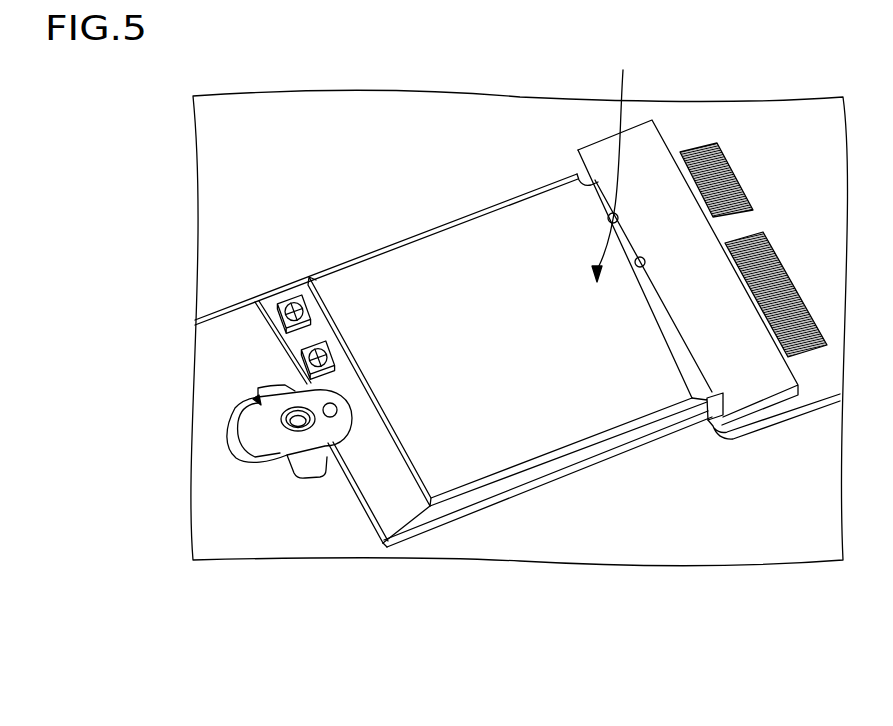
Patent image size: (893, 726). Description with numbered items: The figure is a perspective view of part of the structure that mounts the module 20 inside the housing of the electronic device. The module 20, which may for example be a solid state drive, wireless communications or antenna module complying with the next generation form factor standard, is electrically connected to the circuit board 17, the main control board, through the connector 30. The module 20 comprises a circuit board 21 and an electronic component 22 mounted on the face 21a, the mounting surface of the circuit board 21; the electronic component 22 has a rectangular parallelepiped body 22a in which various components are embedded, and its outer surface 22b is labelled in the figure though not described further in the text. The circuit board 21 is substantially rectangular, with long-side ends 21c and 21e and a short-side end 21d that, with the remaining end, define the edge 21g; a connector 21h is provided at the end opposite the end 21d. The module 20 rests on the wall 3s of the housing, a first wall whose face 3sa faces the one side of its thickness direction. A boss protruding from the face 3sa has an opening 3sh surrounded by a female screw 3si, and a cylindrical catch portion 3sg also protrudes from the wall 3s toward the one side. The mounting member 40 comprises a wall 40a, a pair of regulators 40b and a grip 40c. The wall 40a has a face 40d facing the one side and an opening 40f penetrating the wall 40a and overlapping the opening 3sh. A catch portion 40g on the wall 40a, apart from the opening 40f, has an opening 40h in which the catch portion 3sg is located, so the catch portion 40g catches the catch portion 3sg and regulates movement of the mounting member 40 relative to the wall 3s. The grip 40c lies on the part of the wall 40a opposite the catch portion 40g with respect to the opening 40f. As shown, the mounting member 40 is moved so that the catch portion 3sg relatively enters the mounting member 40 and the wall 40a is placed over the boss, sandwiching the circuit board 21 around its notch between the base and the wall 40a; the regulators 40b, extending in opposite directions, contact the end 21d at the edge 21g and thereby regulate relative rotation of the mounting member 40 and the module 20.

The circuit board 17 is at (519, 343).
The wall 3s is at (519, 365).
The face 3sa is at (716, 589).
The catch portion 3sg is at (352, 484).
The opening 3sh is at (316, 236).
The female screw 3si is at (336, 57).
The module 20 is at (613, 164).
The circuit board 21 is at (486, 400).
The face 21a is at (611, 510).
The end 21c is at (282, 290).
The end 21d is at (252, 323).
The end 21e is at (577, 470).
The edge 21g is at (372, 523).
The connector 21h is at (700, 378).
The electronic component 22 is at (507, 276).
The body 22a is at (507, 276).
The antenna board surface 22b is at (515, 248).
The connector 30 is at (648, 142).
The mounting member 40 is at (266, 288).
The wall 40a is at (280, 416).
The regulators 40b is at (293, 474).
The grip 40c is at (237, 415).
The face 40d is at (191, 431).
The opening 40f is at (256, 397).
The catch portion 40g is at (439, 57).
The opening 40h is at (394, 231).